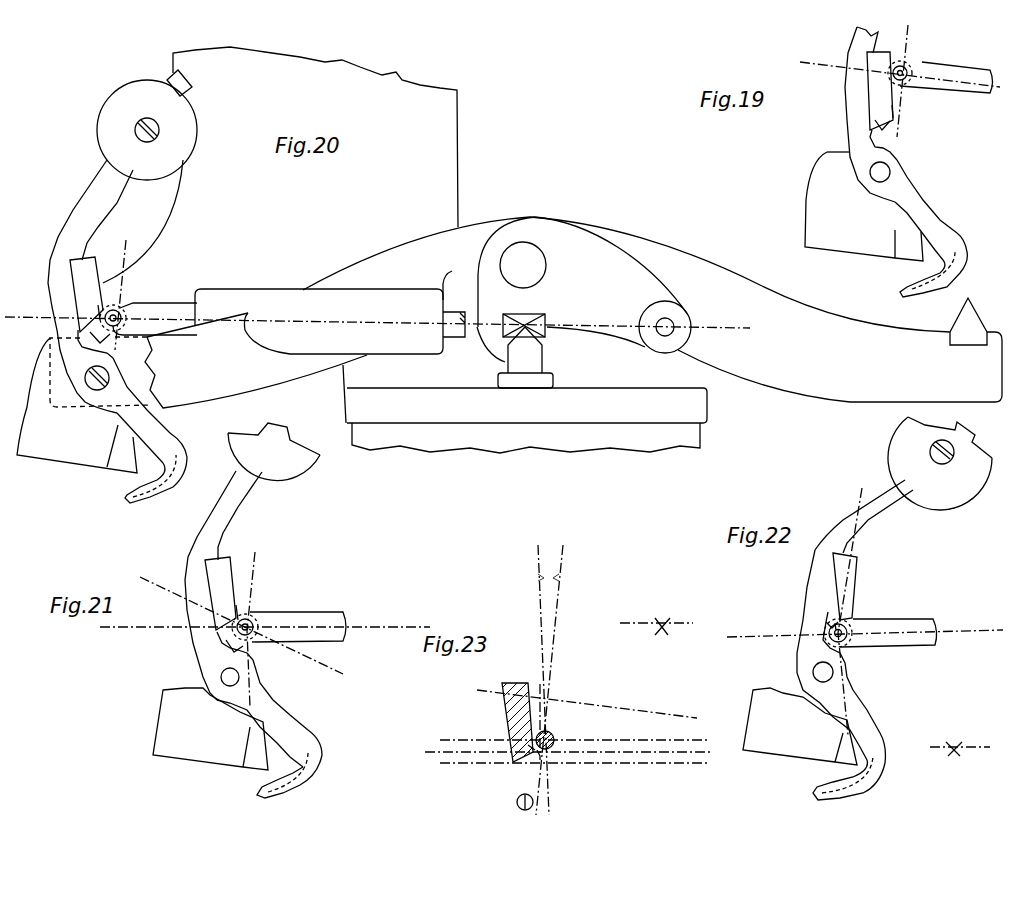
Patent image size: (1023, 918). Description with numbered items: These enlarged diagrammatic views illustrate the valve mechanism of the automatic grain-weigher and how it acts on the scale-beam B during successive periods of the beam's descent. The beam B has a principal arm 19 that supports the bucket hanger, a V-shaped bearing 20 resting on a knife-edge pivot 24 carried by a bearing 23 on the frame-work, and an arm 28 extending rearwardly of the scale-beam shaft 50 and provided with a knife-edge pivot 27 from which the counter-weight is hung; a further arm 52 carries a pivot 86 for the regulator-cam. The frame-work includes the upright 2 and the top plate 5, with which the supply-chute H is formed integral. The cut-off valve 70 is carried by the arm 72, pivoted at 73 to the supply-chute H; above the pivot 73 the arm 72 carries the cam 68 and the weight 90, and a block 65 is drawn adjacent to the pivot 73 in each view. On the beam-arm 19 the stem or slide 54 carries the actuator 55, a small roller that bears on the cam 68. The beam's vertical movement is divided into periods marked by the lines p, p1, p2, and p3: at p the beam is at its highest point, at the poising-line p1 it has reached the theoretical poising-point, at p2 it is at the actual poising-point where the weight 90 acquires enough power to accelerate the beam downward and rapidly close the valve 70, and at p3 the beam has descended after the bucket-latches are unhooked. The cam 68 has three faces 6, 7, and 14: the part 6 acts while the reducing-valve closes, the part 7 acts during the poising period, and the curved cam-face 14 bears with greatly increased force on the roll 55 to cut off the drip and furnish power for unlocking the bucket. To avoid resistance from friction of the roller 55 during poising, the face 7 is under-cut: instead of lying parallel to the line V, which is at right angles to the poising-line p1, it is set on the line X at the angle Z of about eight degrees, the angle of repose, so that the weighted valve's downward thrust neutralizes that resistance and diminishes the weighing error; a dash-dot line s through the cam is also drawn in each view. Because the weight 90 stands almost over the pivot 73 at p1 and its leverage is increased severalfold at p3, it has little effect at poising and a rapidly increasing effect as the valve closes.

In FIG. 20, the upright 2 is at (585, 436).
In FIG. 20, the top plate 5 is at (700, 405).
In FIG. 19, the cam-face part 6 is at (888, 84).
In FIG. 20, the cam-face part 6 is at (100, 288).
In FIG. 21, the cam-face part 6 is at (232, 573).
In FIG. 23, the cam-face part 6 is at (532, 700).
In FIG. 22, the cam-face part 6 is at (857, 592).
In FIG. 19, the cam-face part 7 is at (895, 112).
In FIG. 20, the cam-face part 7 is at (100, 312).
In FIG. 21, the cam-face part 7 is at (237, 620).
In FIG. 23, the cam-face part 7 is at (528, 745).
In FIG. 22, the cam-face part 7 is at (835, 630).
In FIG. 19, the curved cam-face 14 is at (885, 131).
In FIG. 20, the curved cam-face 14 is at (100, 341).
In FIG. 21, the curved cam-face 14 is at (234, 655).
In FIG. 23, the curved cam-face 14 is at (538, 750).
In FIG. 22, the curved cam-face 14 is at (831, 622).
In FIG. 20, the principal arm 19 is at (288, 376).
In FIG. 20, the V-shaped bearing 20 is at (528, 324).
In FIG. 20, the bearing 23 is at (516, 380).
In FIG. 20, the pivot 24 is at (524, 331).
In FIG. 23, the pivot 24 is at (656, 617).
In FIG. 22, the pivot 24 is at (960, 742).
In FIG. 20, the pivot 27 is at (970, 314).
In FIG. 20, the arm 28 is at (848, 320).
In FIG. 20, the scale-beam shaft 50 is at (528, 216).
In FIG. 20, the arm 52 is at (650, 284).
In FIG. 19, the stem 54 is at (960, 73).
In FIG. 20, the stem 54 is at (160, 301).
In FIG. 21, the stem 54 is at (325, 620).
In FIG. 22, the stem 54 is at (902, 627).
In FIG. 19, the actuator 55 is at (905, 68).
In FIG. 20, the actuator 55 is at (119, 311).
In FIG. 21, the actuator 55 is at (250, 620).
In FIG. 23, the actuator 55 is at (553, 736).
In FIG. 22, the actuator 55 is at (827, 641).
In FIG. 19, the block 65 is at (845, 242).
In FIG. 20, the block 65 is at (60, 466).
In FIG. 21, the block 65 is at (202, 754).
In FIG. 22, the block 65 is at (777, 753).
In FIG. 19, the cam 68 is at (883, 98).
In FIG. 20, the cam 68 is at (85, 282).
In FIG. 21, the cam 68 is at (223, 580).
In FIG. 23, the cam 68 is at (503, 702).
In FIG. 22, the cam 68 is at (843, 583).
In FIG. 19, the cut-off valve 70 is at (930, 283).
In FIG. 20, the cut-off valve 70 is at (152, 498).
In FIG. 21, the cut-off valve 70 is at (283, 780).
In FIG. 22, the cut-off valve 70 is at (847, 788).
In FIG. 19, the arm 72 is at (933, 227).
In FIG. 20, the arm 72 is at (130, 411).
In FIG. 21, the arm 72 is at (288, 722).
In FIG. 22, the arm 72 is at (866, 743).
In FIG. 19, the pivot 73 is at (877, 172).
In FIG. 20, the pivot 73 is at (85, 378).
In FIG. 21, the pivot 73 is at (223, 677).
In FIG. 23, the pivot 73 is at (517, 802).
In FIG. 22, the pivot 73 is at (831, 672).
In FIG. 20, the pivot 86 is at (673, 331).
In FIG. 20, the weight 90 is at (131, 97).
In FIG. 21, the weight 90 is at (285, 459).
In FIG. 22, the weight 90 is at (960, 477).
In FIG. 20, the supply-chute H is at (410, 80).
In FIG. 20, the scale-beam B is at (652, 304).
In FIG. 19, the position line p is at (810, 64).
In FIG. 21, the position line p is at (243, 625).
In FIG. 23, the position line p is at (492, 695).
In FIG. 20, the poising-line p1 is at (747, 327).
In FIG. 23, the poising-line p1 is at (445, 740).
In FIG. 21, the position line p2 is at (418, 625).
In FIG. 23, the position line p2 is at (440, 748).
In FIG. 23, the position line p3 is at (460, 763).
In FIG. 22, the position line p3 is at (740, 637).
In FIG. 19, the line s is at (904, 81).
In FIG. 20, the line s is at (124, 292).
In FIG. 21, the line s is at (257, 627).
In FIG. 23, the line s is at (555, 660).
In FIG. 22, the line s is at (862, 488).
In FIG. 23, the line V is at (536, 556).
In FIG. 23, the line x X is at (561, 560).
In FIG. 23, the angle Z is at (553, 556).